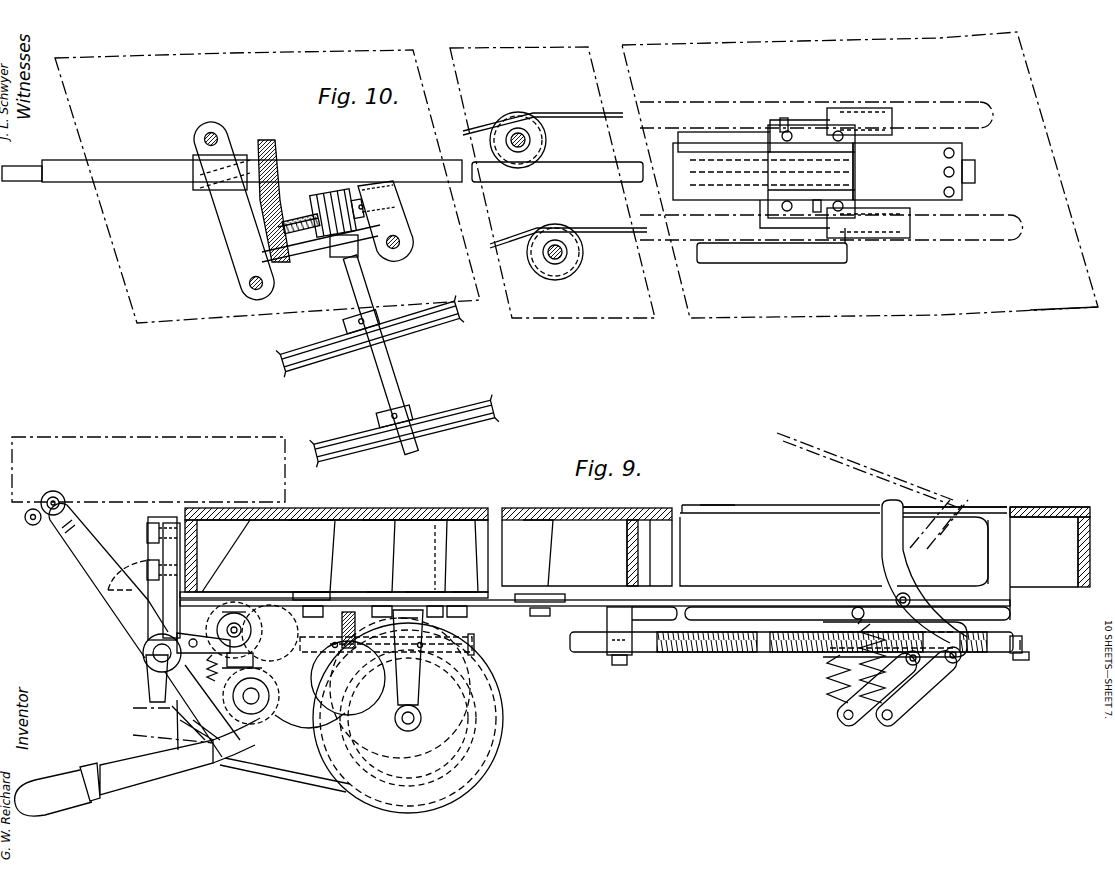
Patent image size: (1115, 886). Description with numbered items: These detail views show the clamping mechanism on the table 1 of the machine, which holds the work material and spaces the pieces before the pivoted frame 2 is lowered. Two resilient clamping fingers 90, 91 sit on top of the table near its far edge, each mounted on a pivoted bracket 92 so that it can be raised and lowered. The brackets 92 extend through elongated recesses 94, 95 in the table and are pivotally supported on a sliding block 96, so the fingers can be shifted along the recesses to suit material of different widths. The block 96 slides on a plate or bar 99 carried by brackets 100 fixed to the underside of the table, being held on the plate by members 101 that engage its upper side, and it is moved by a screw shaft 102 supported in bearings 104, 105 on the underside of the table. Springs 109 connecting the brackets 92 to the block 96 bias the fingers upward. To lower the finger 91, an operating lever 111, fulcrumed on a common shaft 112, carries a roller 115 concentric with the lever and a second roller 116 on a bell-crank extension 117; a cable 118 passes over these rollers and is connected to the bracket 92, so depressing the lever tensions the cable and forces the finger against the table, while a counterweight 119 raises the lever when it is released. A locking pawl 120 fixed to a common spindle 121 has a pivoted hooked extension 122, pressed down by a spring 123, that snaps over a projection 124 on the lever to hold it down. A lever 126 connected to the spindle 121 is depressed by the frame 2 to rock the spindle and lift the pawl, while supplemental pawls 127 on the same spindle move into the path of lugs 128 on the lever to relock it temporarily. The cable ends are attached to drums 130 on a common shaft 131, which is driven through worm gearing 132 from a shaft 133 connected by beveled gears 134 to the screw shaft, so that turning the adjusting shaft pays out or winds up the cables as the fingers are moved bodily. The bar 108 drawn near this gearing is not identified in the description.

In FIG. 10, the frame 1 is at (1030, 305).
In FIG. 9, the frame 1 is at (1052, 507).
In FIG. 9, the pivoted frame 2 is at (190, 440).
In FIG. 10, the clamping finger 90 is at (728, 137).
In FIG. 9, the clamping finger 90 is at (714, 507).
In FIG. 10, the clamping finger 91 is at (765, 263).
In FIG. 9, the clamping finger 91 is at (786, 506).
In FIG. 10, the pivoted bracket 92 is at (890, 116).
In FIG. 9, the pivoted bracket 92 is at (882, 556).
In FIG. 10, the elongated recess 94 is at (989, 117).
In FIG. 10, the elongated recess 95 is at (1002, 238).
In FIG. 9, the elongated recess 95 is at (972, 509).
In FIG. 9, the sliding block 96 is at (940, 620).
In FIG. 10, the plate or bar 99 is at (713, 200).
In FIG. 9, the plate or bar 99 is at (776, 607).
In FIG. 9, the brackets 100 is at (627, 562).
In FIG. 10, the members 101 is at (848, 196).
In FIG. 9, the screw shaft 102 is at (745, 653).
In FIG. 9, the bearing 104 is at (612, 660).
In FIG. 9, the bearing 105 is at (1022, 657).
In FIG. 10, the bar 108 is at (38, 182).
In FIG. 9, the springs 109 is at (860, 678).
In FIG. 9, the operating lever 111 is at (158, 774).
In FIG. 9, the common shaft 112 is at (254, 716).
In FIG. 9, the roller 115 is at (216, 748).
In FIG. 9, the roller 116 is at (236, 614).
In FIG. 9, the bell-crank extension 117 is at (232, 613).
In FIG. 9, the cable 118 is at (596, 604).
In FIG. 9, the counterweight 119 is at (330, 710).
In FIG. 9, the locking pawl 120 is at (193, 636).
In FIG. 9, the common spindle 121 is at (153, 656).
In FIG. 9, the pivoted hooked extension 122 is at (259, 650).
In FIG. 9, the spring 123 is at (202, 688).
In FIG. 9, the projection 124 is at (253, 661).
In FIG. 9, the lever 126 is at (97, 577).
In FIG. 9, the pawls 127 is at (152, 689).
In FIG. 9, the lugs 128 is at (172, 719).
In FIG. 10, the drums 130 is at (447, 325).
In FIG. 9, the drums 130 is at (495, 743).
In FIG. 10, the common shaft 131 is at (384, 385).
In FIG. 9, the common shaft 131 is at (409, 732).
In FIG. 10, the worm gearing 132 is at (317, 232).
In FIG. 9, the worm gearing 132 is at (496, 698).
In FIG. 10, the shaft 133 is at (228, 249).
In FIG. 9, the shaft 133 is at (476, 646).
In FIG. 10, the beveled gears 134 is at (277, 204).
In FIG. 9, the beveled gears 134 is at (356, 628).